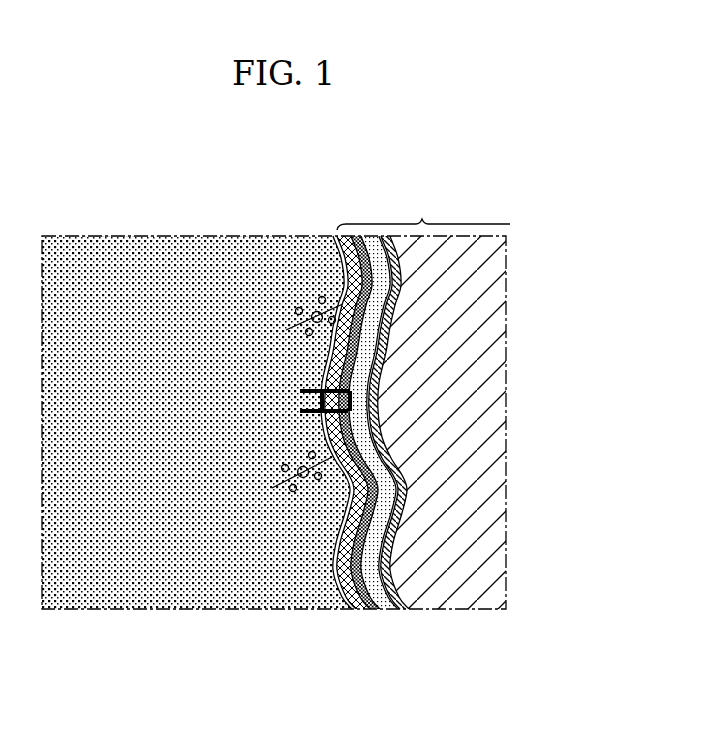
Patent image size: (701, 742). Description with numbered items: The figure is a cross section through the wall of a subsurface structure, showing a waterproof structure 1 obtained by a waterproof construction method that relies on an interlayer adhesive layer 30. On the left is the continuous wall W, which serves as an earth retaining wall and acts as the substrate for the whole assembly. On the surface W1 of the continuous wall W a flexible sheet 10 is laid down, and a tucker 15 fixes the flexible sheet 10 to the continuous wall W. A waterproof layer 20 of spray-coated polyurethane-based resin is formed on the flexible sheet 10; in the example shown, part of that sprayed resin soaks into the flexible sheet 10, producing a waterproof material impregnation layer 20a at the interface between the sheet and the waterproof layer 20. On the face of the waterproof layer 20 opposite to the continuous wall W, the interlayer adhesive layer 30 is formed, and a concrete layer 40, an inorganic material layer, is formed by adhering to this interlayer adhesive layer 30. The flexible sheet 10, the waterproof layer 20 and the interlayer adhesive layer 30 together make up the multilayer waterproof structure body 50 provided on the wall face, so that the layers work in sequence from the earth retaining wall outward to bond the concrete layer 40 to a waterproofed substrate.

The waterproof structure 1 is at (504, 191).
The flexible sheet 10 is at (358, 609).
The tucker 15 is at (300, 388).
The waterproof layer 20 is at (388, 609).
The waterproof material impregnation layer 20a is at (372, 609).
The interlayer adhesive layer 30 is at (397, 609).
The concrete layer 40 is at (490, 551).
The multilayer waterproof structure body 50 is at (423, 213).
The continuous wall W is at (120, 577).
The surface of continuous wall W1 is at (328, 236).